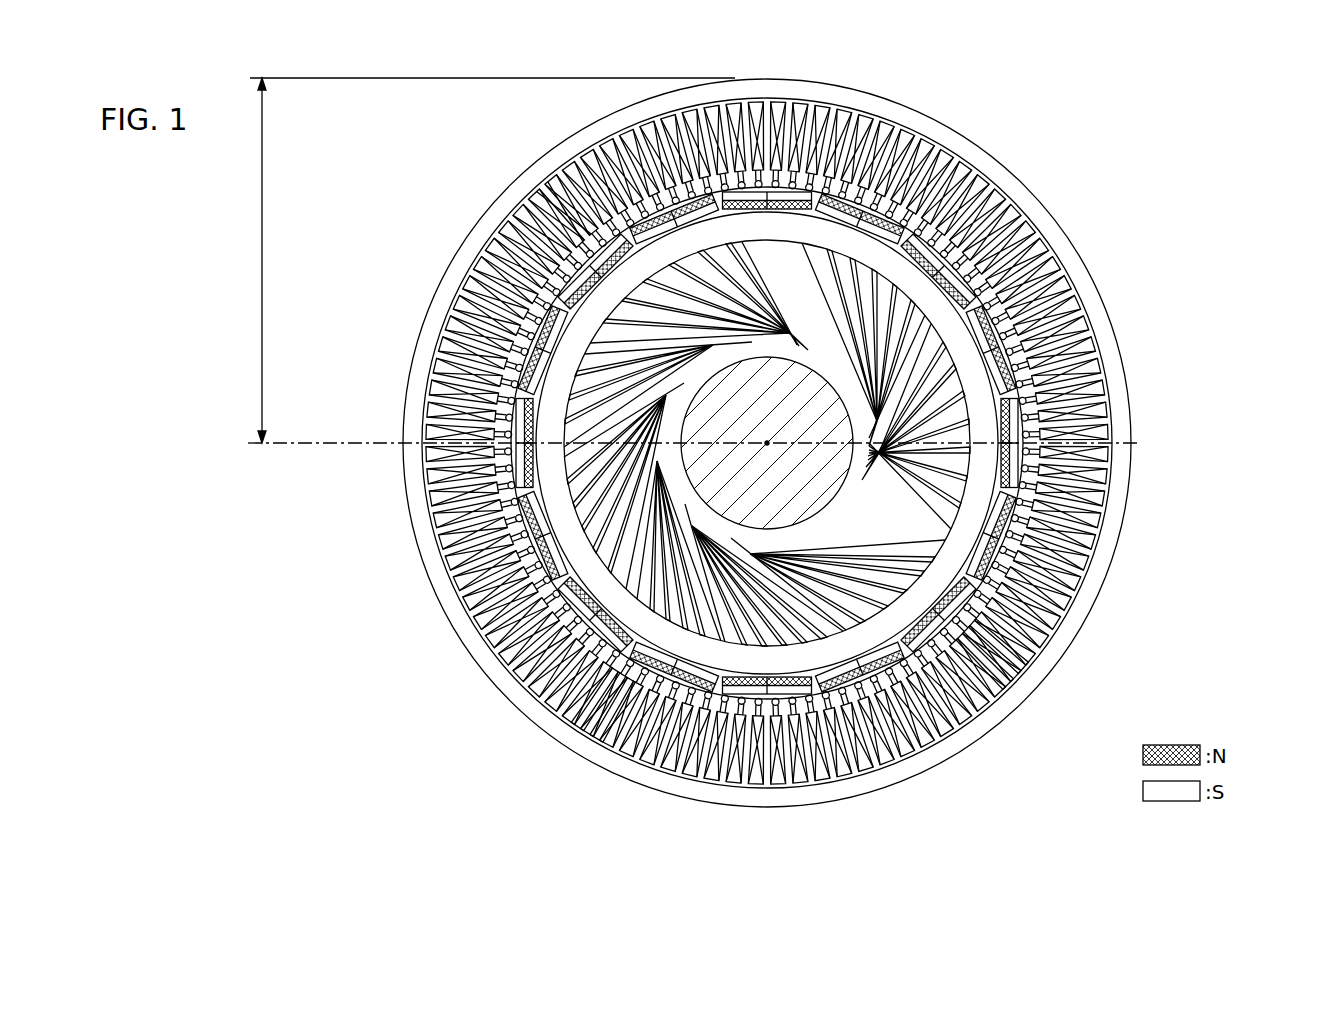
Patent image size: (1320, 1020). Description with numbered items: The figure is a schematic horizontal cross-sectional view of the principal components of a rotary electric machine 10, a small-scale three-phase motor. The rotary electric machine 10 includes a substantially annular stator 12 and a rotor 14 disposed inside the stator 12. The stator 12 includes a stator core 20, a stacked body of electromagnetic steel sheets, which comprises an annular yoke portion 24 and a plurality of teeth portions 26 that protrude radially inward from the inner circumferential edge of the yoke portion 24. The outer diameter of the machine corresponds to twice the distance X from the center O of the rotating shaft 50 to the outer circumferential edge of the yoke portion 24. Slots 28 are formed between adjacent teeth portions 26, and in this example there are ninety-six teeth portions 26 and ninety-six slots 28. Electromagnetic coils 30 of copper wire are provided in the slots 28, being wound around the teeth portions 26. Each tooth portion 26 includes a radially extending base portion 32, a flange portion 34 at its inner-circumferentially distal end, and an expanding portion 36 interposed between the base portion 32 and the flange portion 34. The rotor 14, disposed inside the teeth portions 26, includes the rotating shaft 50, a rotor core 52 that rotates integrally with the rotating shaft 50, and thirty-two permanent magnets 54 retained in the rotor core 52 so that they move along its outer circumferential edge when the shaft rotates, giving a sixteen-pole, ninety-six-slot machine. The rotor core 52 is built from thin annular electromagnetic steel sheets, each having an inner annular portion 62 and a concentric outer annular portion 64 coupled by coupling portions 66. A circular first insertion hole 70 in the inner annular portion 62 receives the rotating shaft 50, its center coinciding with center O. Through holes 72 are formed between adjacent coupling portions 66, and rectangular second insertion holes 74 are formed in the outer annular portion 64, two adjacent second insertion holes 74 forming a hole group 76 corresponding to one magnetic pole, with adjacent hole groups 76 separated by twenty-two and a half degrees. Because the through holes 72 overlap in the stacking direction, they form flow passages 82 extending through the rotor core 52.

The rotary electric machine 10 is at (153, 199).
The stator 12 is at (1052, 85).
The rotor 14 is at (547, 191).
The stator core 20 is at (1000, 149).
The yoke portion 24 is at (1047, 230).
The teeth portions 26 is at (358, 670).
The slots 28 is at (620, 273).
The electromagnetic coils 30 is at (925, 138).
The base portion 32 is at (560, 578).
The flange portion 34 is at (593, 610).
The expanding portion 36 is at (612, 623).
The rotating shaft 50 is at (797, 508).
The rotor core 52 is at (600, 640).
The permanent magnets 54 is at (1258, 505).
The inner annular portion 62 is at (740, 360).
The outer annular portion 64 is at (990, 480).
The coupling portions 66 is at (597, 497).
The first insertion hole 70 is at (690, 461).
The through holes 72 is at (775, 543).
The second insertion holes 74 is at (592, 725).
The hole group 76 is at (491, 737).
The flow passages 82 is at (745, 630).